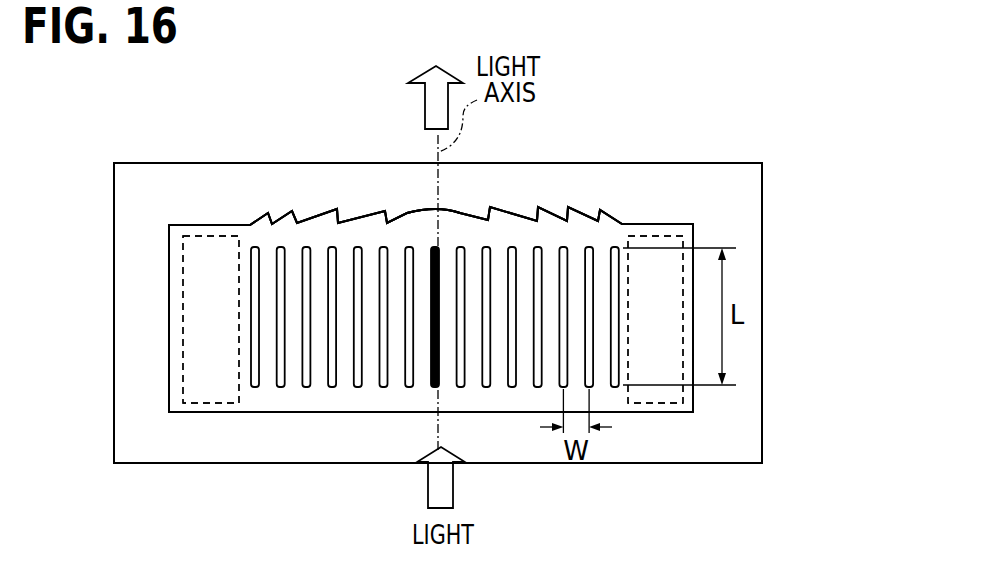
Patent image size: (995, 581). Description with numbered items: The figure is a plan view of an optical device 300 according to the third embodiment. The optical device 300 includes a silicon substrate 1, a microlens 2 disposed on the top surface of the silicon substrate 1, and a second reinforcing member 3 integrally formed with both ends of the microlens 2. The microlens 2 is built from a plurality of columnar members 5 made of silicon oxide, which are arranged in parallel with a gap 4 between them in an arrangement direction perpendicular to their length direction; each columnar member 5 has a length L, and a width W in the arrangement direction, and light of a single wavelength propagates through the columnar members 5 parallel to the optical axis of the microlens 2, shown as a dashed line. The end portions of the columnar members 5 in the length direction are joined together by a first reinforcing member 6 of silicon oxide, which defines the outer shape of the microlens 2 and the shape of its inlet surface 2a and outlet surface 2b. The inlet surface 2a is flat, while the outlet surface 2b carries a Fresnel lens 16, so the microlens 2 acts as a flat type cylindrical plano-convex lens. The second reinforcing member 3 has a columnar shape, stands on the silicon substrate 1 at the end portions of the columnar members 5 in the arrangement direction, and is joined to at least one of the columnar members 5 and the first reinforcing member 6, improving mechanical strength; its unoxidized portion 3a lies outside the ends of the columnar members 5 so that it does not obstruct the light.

The optical device 300 is at (708, 143).
The silicon substrate 1 is at (762, 245).
The microlens 2 is at (348, 207).
The inlet surface 2a is at (363, 413).
The outlet surface 2b is at (412, 212).
The second reinforcing member 3 is at (178, 398).
The unoxidized portion 3a is at (215, 392).
The gap 4 is at (488, 368).
The columnar member 5 is at (450, 368).
The first reinforcing member 6 is at (285, 237).
The Fresnel lens 16 is at (462, 210).